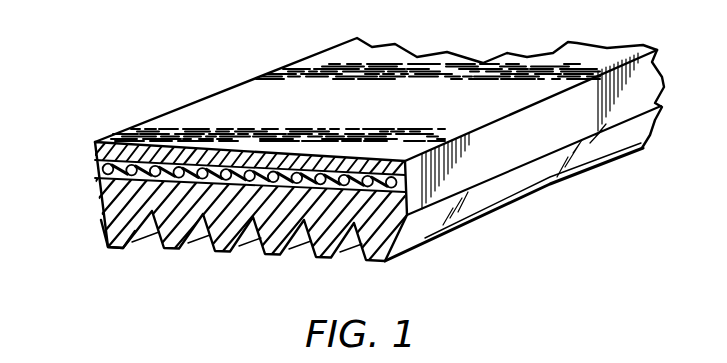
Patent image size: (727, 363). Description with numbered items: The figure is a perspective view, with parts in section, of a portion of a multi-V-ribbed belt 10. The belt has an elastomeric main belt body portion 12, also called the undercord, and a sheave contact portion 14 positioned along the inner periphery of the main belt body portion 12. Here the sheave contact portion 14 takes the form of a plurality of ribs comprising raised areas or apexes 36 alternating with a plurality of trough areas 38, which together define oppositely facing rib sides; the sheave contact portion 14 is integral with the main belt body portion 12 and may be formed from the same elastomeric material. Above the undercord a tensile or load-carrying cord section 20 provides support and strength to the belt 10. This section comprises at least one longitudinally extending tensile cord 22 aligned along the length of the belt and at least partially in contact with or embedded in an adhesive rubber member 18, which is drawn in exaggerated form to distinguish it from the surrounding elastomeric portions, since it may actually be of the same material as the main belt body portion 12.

The multi-V-ribbed belt 10 is at (232, 72).
The main belt body portion 12 is at (418, 247).
The sheave contact portion 14 is at (241, 250).
The adhesive rubber member 18 is at (98, 163).
The tensile cord section 20 is at (414, 188).
The tensile cord 22 is at (95, 206).
The apexes 36 is at (118, 249).
The trough areas 38 is at (143, 212).